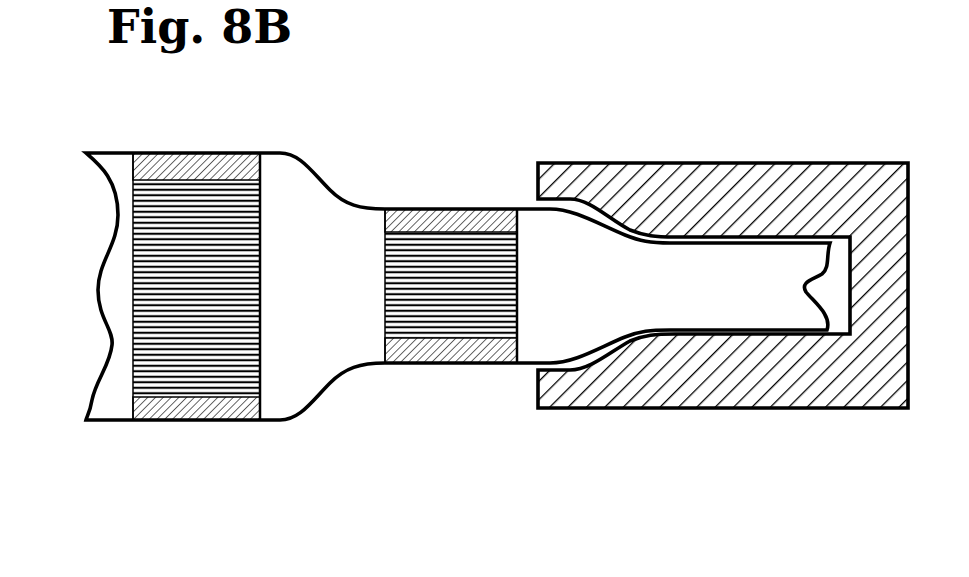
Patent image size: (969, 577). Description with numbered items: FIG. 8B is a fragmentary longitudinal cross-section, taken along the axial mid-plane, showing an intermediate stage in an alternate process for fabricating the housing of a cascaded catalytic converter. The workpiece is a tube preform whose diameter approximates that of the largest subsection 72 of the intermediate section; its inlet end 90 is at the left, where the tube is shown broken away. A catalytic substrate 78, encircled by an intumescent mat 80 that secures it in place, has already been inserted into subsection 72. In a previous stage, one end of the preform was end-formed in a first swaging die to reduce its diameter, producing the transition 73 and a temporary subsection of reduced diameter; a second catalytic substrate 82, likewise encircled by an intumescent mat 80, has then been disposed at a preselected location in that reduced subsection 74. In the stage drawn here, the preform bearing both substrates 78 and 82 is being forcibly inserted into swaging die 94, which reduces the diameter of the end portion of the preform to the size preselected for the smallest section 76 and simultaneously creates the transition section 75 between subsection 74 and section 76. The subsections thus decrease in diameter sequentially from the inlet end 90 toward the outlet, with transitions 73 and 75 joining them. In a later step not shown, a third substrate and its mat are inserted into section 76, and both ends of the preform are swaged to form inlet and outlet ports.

The subsection 72 is at (176, 152).
The transition 73 is at (306, 183).
The subsection 74 is at (463, 208).
The transition section 75 is at (587, 356).
The subsection 76 is at (680, 330).
The catalytic substrate 78 is at (261, 292).
The intumescent mat 80 is at (262, 406).
The catalytic substrate 82 is at (518, 253).
The transition inlet end 90 is at (114, 231).
The swaging die 94 is at (703, 398).